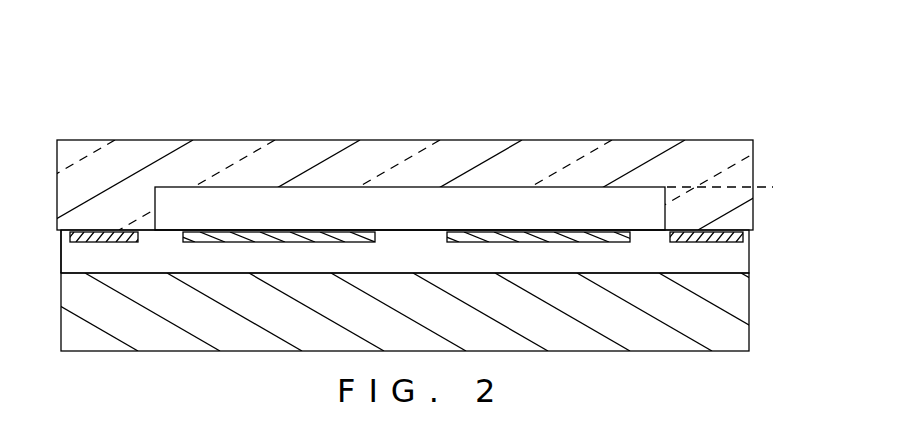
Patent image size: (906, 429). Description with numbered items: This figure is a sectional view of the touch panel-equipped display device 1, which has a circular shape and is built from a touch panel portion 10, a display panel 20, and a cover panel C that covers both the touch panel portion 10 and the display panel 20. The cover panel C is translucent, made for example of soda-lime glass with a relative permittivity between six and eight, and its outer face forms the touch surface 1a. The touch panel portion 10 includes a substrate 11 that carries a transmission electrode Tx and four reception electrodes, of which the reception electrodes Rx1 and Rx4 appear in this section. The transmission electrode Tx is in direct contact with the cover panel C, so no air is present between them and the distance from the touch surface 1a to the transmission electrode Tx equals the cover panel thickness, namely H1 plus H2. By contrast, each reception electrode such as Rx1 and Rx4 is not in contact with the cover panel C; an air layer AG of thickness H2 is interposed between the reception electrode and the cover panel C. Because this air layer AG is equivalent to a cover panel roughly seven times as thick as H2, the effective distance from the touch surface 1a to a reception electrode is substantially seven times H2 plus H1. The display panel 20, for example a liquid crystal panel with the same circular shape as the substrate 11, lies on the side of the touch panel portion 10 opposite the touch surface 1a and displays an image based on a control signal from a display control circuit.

The touch panel-equipped display device 1 is at (426, 39).
The touch surface 1a is at (427, 160).
The cover panel C is at (73, 172).
The air layer AG is at (418, 215).
The touch panel portion 10 is at (760, 232).
The substrate 11 is at (72, 253).
The display panel 20 is at (760, 277).
The transmission electrode Tx is at (118, 230).
The reception electrode Rx1 is at (303, 230).
The reception electrode Rx4 is at (500, 230).
The thickness H1 is at (765, 143).
The thickness H2 is at (765, 191).